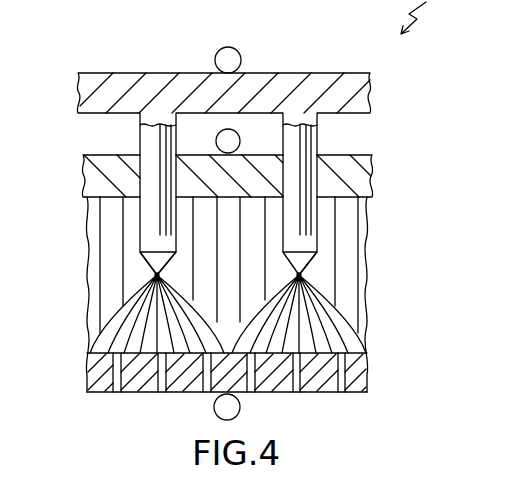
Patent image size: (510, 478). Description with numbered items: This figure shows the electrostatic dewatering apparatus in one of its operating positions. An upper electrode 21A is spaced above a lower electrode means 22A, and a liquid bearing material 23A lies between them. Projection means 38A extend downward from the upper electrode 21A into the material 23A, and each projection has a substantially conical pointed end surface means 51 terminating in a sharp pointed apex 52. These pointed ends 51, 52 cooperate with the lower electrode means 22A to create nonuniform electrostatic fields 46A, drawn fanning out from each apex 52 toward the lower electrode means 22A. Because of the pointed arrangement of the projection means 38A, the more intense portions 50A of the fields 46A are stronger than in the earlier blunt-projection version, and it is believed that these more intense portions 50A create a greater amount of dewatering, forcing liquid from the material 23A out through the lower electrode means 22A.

The upper electrode 21A is at (372, 170).
The lower electrode means 22A is at (367, 392).
The liquid bearing material 23A is at (95, 245).
The projection means 38A is at (142, 211).
The nonuniform electrostatic fields 46A is at (118, 333).
The more intense portions 50A is at (128, 302).
The pointed end surface means 51 is at (150, 263).
The sharp pointed apexes 52 is at (140, 282).